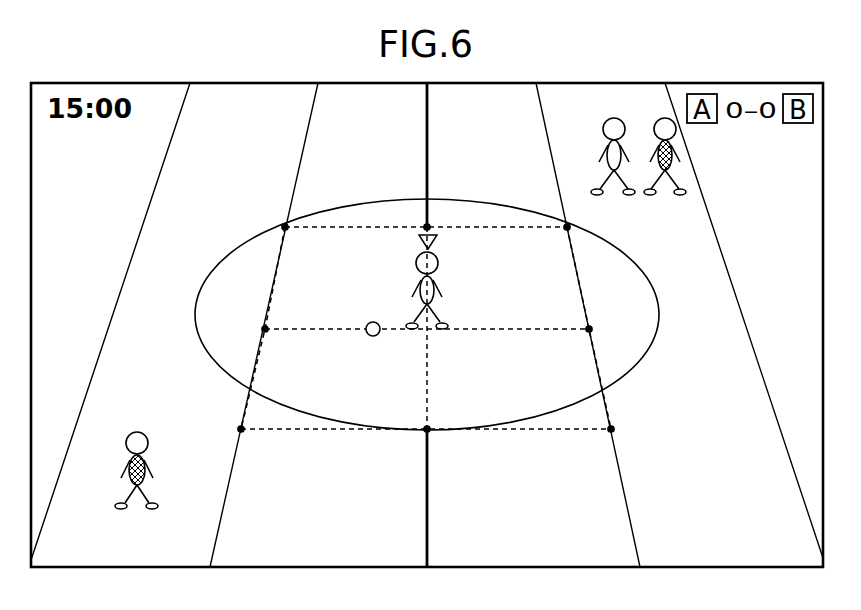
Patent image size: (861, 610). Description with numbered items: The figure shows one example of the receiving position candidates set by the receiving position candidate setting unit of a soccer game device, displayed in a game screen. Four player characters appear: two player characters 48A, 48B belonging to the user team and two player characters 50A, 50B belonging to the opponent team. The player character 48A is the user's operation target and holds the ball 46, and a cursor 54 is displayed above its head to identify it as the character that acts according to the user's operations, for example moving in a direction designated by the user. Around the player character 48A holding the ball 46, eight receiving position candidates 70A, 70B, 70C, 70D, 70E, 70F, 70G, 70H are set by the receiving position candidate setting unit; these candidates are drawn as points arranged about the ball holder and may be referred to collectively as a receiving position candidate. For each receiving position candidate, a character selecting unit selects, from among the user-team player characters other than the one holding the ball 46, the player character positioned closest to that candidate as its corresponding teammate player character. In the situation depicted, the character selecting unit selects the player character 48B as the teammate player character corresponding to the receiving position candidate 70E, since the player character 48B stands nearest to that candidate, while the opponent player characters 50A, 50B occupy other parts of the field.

The ball 46 is at (373, 336).
The player character 48A is at (440, 262).
The player character 48B is at (630, 195).
The player character 50A is at (137, 432).
The player character 50B is at (686, 192).
The cursor 54 is at (418, 243).
The receiving position candidate 70A is at (589, 329).
The receiving position candidate 70B is at (265, 329).
The receiving position candidate 70C is at (427, 227).
The receiving position candidate 70D is at (427, 429).
The receiving position candidate 70E is at (567, 227).
The receiving position candidate 70F is at (285, 227).
The receiving position candidate 70G is at (241, 429).
The receiving position candidate 70H is at (611, 429).